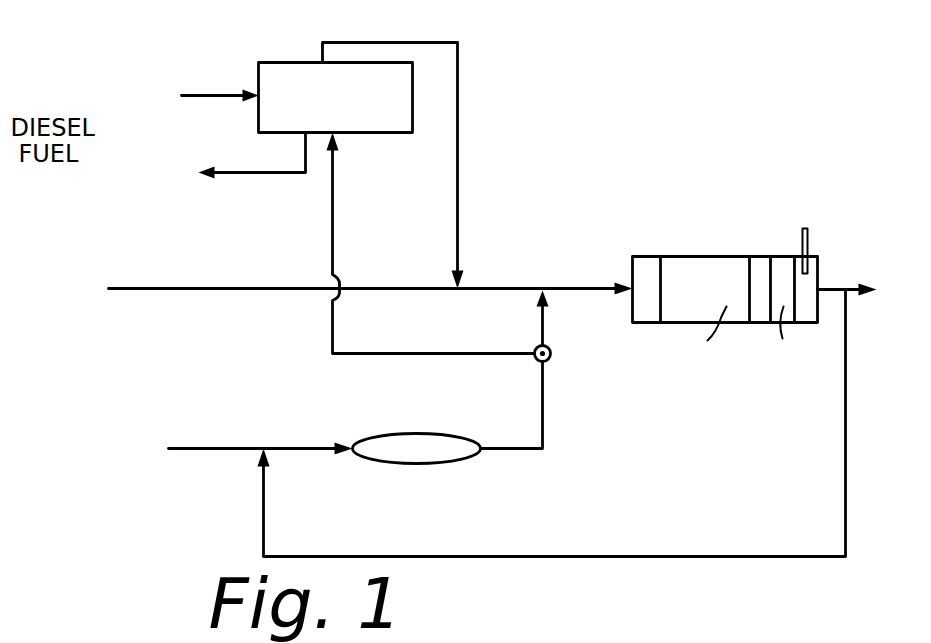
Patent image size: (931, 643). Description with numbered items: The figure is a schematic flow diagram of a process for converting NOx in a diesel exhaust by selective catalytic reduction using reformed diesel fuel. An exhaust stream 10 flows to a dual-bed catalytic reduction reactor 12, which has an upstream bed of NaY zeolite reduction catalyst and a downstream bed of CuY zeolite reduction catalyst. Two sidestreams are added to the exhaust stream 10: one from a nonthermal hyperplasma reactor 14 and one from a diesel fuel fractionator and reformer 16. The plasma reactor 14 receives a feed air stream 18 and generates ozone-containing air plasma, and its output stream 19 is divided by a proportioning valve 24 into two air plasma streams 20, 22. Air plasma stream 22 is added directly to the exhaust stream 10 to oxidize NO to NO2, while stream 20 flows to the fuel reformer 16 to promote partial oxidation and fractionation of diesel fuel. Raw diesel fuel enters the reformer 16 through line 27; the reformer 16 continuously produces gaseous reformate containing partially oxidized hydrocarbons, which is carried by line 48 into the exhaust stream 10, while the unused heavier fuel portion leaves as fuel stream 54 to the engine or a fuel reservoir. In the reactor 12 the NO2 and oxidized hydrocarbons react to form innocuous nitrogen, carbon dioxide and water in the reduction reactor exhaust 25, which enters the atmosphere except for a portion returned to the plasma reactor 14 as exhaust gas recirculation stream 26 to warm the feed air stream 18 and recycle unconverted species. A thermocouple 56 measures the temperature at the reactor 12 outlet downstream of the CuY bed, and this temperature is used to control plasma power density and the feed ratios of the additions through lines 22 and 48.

The exhaust stream 10 is at (166, 291).
The dual-bed catalytic reduction reactor 12 is at (716, 261).
The nonthermal hyperplasma reactor 14 is at (395, 458).
The diesel fuel fractionator and reformer 16 is at (281, 71).
The feed air stream 18 is at (222, 447).
The output stream 19 is at (512, 449).
The air plasma stream 20 is at (332, 318).
The air plasma stream 22 is at (540, 321).
The proportioning valve 24 is at (551, 356).
The reduction reactor exhaust 25 is at (829, 288).
The exhaust gas recirculation stream 26 is at (707, 557).
The raw diesel fuel line 27 is at (207, 94).
The reformed diesel fuel line 48 is at (457, 88).
The fuel stream 54 is at (278, 174).
The thermocouple 56 is at (808, 238).